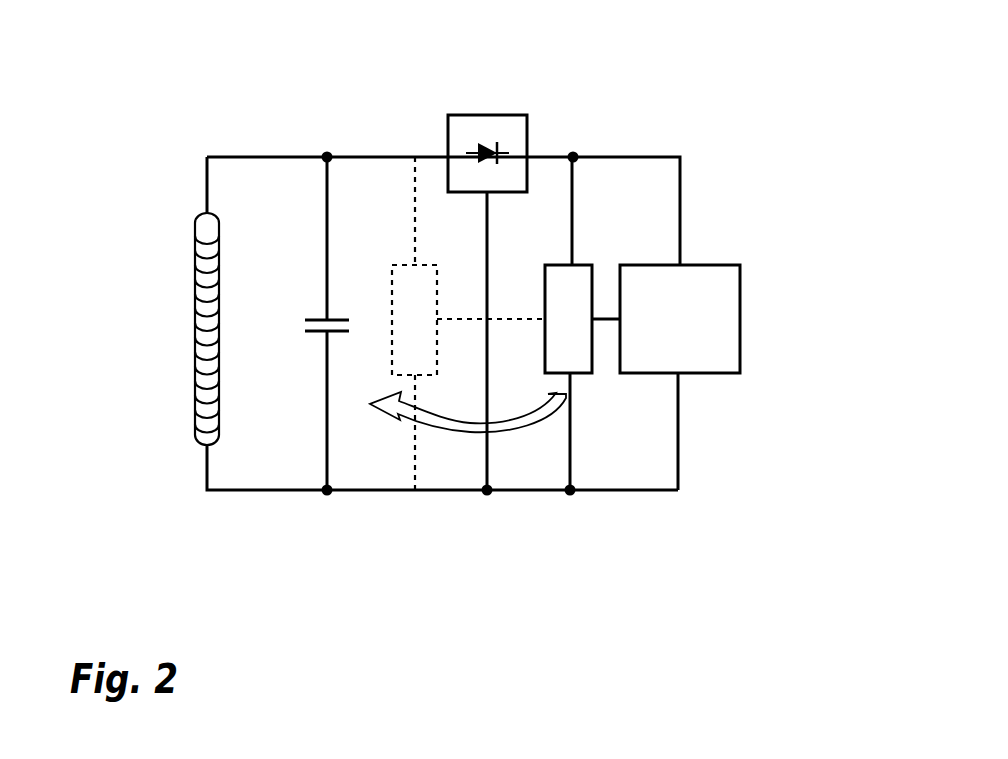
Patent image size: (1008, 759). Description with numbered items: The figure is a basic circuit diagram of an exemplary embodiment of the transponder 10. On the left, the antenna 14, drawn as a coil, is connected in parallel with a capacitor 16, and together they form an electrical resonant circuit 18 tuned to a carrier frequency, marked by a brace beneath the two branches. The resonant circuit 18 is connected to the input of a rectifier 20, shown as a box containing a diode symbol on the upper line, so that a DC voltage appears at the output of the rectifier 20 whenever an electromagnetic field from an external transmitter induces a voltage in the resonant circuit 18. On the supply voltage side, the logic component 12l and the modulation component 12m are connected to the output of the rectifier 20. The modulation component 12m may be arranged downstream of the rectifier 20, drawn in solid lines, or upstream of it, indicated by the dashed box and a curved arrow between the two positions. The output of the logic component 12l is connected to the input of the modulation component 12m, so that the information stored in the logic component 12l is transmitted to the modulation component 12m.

The transponder 10 is at (620, 118).
The logic component 12l is at (740, 325).
The modulation component 12m is at (369, 386).
The antenna 14 is at (195, 310).
The capacitor 16 is at (316, 318).
The resonant circuit 18 is at (322, 500).
The rectifier 20 is at (490, 115).